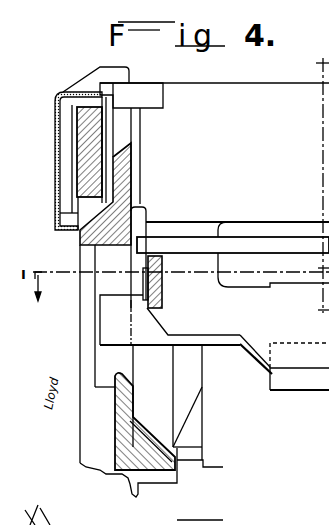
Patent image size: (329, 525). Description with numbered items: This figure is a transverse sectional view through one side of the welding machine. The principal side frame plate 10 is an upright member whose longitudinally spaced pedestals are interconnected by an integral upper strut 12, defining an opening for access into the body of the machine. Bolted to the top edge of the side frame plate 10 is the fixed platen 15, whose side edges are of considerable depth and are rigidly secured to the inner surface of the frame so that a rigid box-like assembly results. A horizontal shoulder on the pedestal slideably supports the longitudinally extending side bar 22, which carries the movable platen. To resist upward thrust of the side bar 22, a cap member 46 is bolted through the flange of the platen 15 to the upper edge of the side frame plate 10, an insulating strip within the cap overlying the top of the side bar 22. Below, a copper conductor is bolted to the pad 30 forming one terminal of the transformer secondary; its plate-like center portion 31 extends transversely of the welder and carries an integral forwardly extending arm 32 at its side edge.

The side frame plate 10 is at (88, 320).
The upper strut 12 is at (88, 238).
The fixed platen 15 is at (254, 93).
The side bar 22 is at (85, 145).
The pad 30 is at (272, 386).
The plate-like center portion 31 is at (258, 345).
The forwardly extending arm 32 is at (165, 308).
The cap member 46 is at (64, 92).